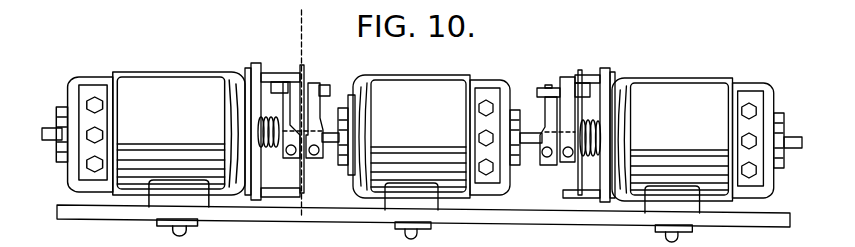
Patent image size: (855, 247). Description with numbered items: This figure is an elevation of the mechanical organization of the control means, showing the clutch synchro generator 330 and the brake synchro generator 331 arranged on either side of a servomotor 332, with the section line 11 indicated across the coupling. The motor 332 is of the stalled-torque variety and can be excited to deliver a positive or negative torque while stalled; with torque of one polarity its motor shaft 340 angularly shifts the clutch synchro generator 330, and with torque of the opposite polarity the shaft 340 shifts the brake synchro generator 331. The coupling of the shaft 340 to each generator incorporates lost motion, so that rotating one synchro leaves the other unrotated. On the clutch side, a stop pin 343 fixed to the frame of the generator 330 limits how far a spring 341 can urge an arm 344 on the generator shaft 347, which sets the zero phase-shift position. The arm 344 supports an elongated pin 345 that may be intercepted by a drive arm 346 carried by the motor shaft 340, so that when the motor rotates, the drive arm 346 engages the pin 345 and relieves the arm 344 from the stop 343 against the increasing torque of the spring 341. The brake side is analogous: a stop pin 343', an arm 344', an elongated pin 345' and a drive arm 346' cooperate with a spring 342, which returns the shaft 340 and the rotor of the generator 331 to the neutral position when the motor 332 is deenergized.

The section line 11- 11 is at (286, 23).
The clutch synchro generator 330 is at (159, 77).
The brake synchro generator 331 is at (701, 66).
The servomotor 332 is at (444, 81).
The motor shaft 340 is at (326, 145).
The spring 341 is at (271, 153).
The spring 342 is at (590, 157).
The stop pin 343 is at (271, 118).
The stop pin 343' is at (605, 126).
The arm 344 is at (307, 116).
The arm 344' is at (590, 113).
The elongated pin 345 is at (336, 78).
The elongated pin 345' is at (533, 77).
The drive arm 346 is at (356, 120).
The drive arm 346' is at (555, 100).
The generator shaft 347 is at (53, 141).